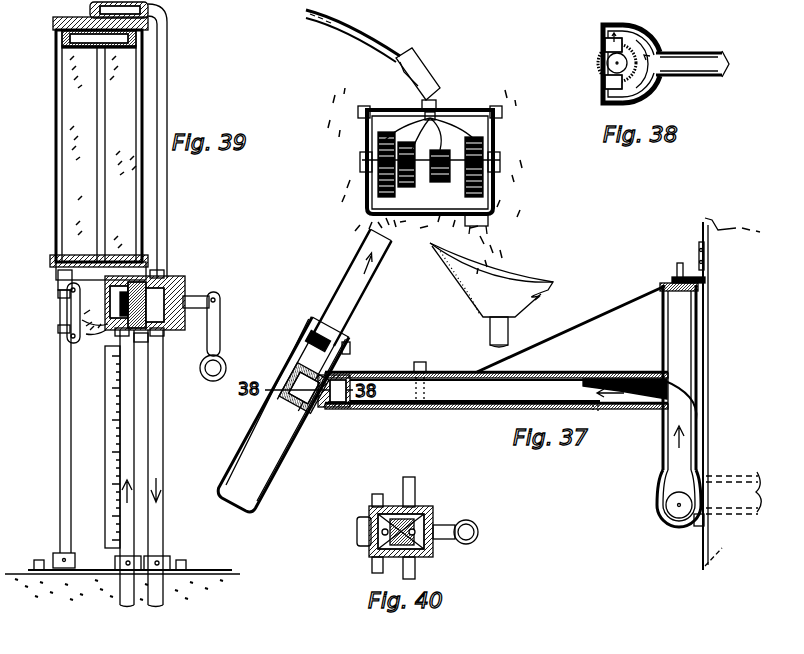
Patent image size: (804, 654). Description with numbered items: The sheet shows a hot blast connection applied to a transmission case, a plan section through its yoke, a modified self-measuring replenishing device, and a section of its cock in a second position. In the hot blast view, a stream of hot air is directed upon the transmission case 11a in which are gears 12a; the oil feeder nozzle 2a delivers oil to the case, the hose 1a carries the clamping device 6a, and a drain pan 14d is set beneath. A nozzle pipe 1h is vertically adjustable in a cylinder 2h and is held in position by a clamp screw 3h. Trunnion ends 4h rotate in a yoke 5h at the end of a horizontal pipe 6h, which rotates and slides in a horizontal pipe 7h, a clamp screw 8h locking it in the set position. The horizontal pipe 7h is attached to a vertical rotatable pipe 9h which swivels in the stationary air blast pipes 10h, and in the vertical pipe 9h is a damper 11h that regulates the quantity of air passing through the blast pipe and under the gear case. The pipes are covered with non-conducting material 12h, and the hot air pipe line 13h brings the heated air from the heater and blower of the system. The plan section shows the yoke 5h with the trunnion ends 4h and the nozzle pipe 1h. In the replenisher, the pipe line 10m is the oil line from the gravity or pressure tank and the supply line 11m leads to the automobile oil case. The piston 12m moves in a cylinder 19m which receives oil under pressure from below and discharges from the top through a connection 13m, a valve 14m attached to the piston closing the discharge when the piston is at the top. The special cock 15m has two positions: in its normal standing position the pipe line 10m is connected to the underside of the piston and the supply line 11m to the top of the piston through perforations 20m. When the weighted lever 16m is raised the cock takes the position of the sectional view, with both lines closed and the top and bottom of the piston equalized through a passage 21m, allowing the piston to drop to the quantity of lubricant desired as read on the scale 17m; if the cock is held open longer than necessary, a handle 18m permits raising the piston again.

In FIG. 39, the piston 12m is at (92, 38).
In FIG. 39, the valve 14m is at (103, 18).
In FIG. 39, the cylinder 19m is at (58, 165).
In FIG. 39, the connection 13m is at (162, 218).
In FIG. 39, the special cock 15m is at (180, 290).
In FIG. 40, the special cock 15m is at (433, 516).
In FIG. 39, the handle 18m is at (80, 312).
In FIG. 39, the perforations 20m is at (185, 320).
In FIG. 40, the perforations 20m is at (362, 532).
In FIG. 39, the weighted lever 16m is at (210, 370).
In FIG. 40, the weighted lever 16m is at (476, 525).
In FIG. 39, the scale 17m is at (116, 440).
In FIG. 39, the pipe line 10m is at (121, 604).
In FIG. 39, the supply line 11m is at (156, 604).
In FIG. 40, the passage 21m is at (397, 518).
In FIG. 38, the nozzle pipe 1h is at (606, 64).
In FIG. 37, the nozzle pipe 1h is at (354, 290).
In FIG. 38, the cylinder 2h is at (604, 45).
In FIG. 37, the cylinder 2h is at (275, 440).
In FIG. 37, the clamp screw 3h is at (345, 340).
In FIG. 38, the trunnion ends 4h is at (605, 88).
In FIG. 38, the yoke 5h is at (652, 82).
In FIG. 37, the yoke 5h is at (350, 372).
In FIG. 37, the horizontal pipe 6h is at (392, 405).
In FIG. 37, the horizontal pipe 7h is at (630, 358).
In FIG. 37, the clamp screw 8h is at (428, 362).
In FIG. 37, the vertical rotatable pipe 9h is at (672, 455).
In FIG. 37, the stationary air blast pipes 10h is at (670, 514).
In FIG. 37, the damper 11h is at (680, 390).
In FIG. 37, the non-conducting material 12h is at (268, 483).
In FIG. 37, the hot air pipe line 13h is at (742, 497).
In FIG. 37, the hose 1a is at (356, 40).
In FIG. 37, the oil feeder nozzle 2a is at (434, 112).
In FIG. 37, the clamping device 6a is at (412, 58).
In FIG. 37, the transmission case 11a is at (493, 135).
In FIG. 37, the gears 12a is at (486, 190).
In FIG. 37, the drain pan 14d is at (518, 262).